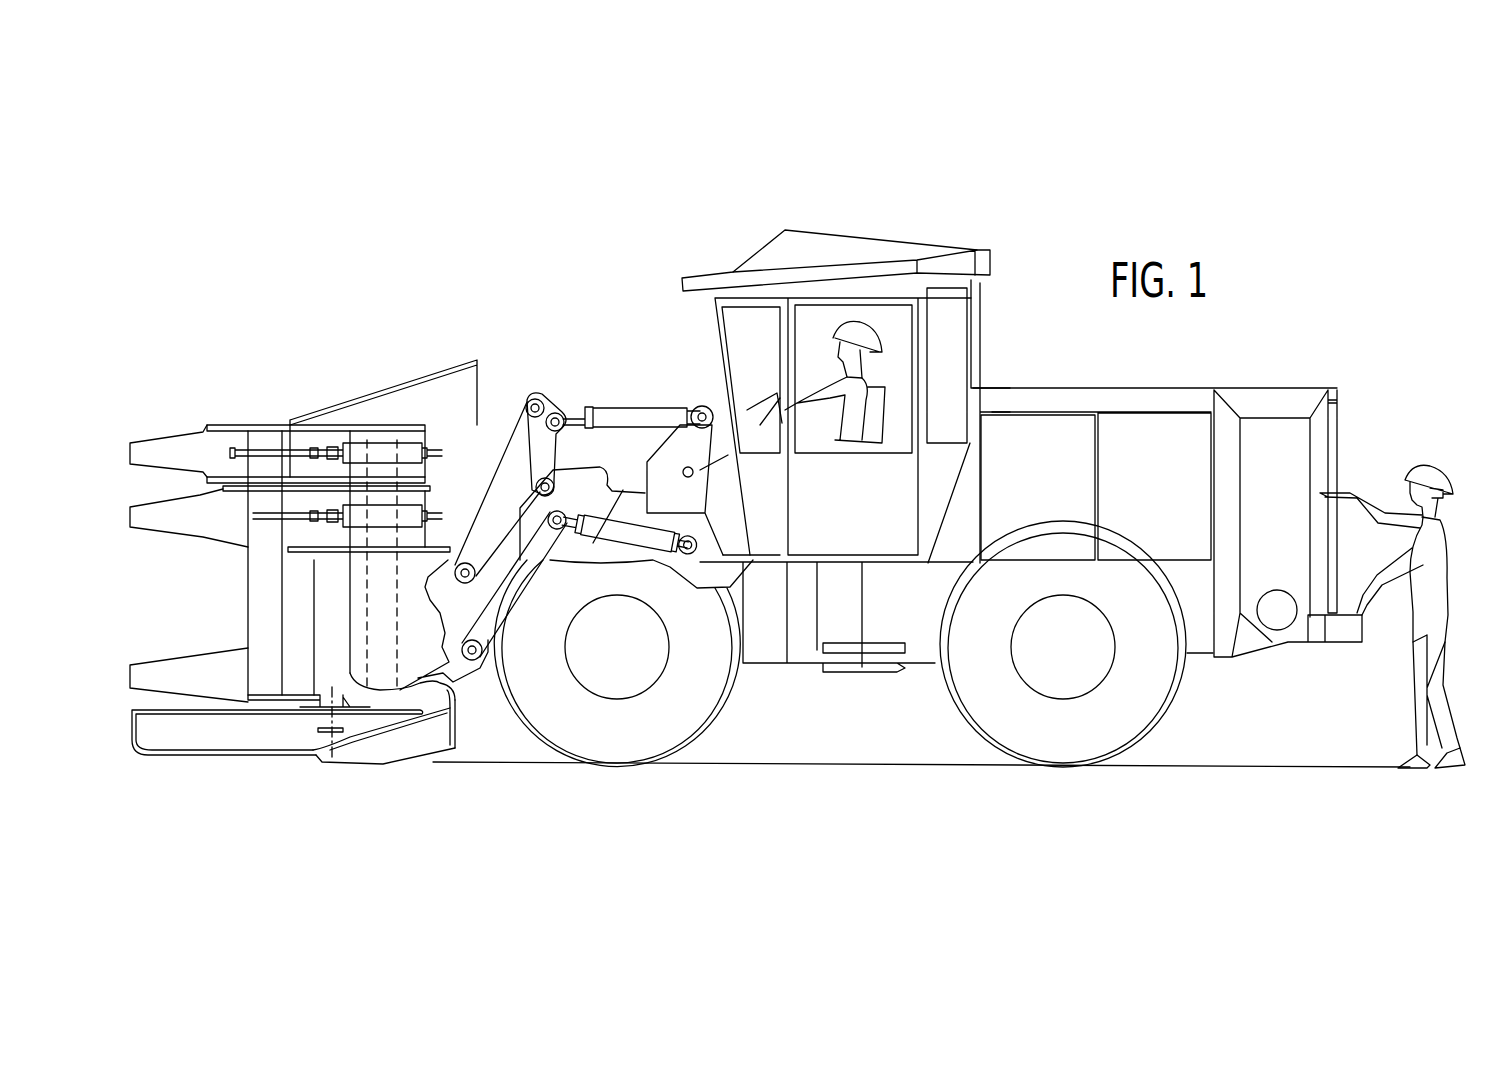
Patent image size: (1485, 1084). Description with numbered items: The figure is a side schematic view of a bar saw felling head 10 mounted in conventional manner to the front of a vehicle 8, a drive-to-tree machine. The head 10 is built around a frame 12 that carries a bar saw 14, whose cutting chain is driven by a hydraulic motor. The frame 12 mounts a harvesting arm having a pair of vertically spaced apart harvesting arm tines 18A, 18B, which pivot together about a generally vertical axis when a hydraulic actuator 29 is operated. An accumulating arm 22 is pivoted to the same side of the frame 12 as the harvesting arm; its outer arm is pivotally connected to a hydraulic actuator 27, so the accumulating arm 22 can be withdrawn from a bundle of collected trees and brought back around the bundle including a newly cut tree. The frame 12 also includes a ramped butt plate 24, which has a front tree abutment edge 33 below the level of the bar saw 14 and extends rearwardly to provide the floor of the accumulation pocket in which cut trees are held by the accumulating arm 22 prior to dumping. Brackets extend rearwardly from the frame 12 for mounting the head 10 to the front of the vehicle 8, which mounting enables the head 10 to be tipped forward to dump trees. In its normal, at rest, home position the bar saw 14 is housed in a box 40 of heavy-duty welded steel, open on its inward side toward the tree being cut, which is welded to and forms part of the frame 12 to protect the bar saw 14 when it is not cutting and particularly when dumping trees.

The vehicle 8 is at (1160, 388).
The bar saw felling head 10 is at (380, 388).
The frame 12 is at (484, 393).
The bar saw 14 is at (317, 732).
The harvesting arm tine 18A is at (162, 534).
The harvesting arm tine 18B is at (163, 660).
The accumulating arm 22 is at (153, 437).
The ramped butt plate 24 is at (317, 743).
The hydraulic actuator 27 is at (428, 448).
The hydraulic actuator 29 is at (400, 506).
The front tree abutment edge 33 is at (317, 765).
The box 40 is at (132, 758).